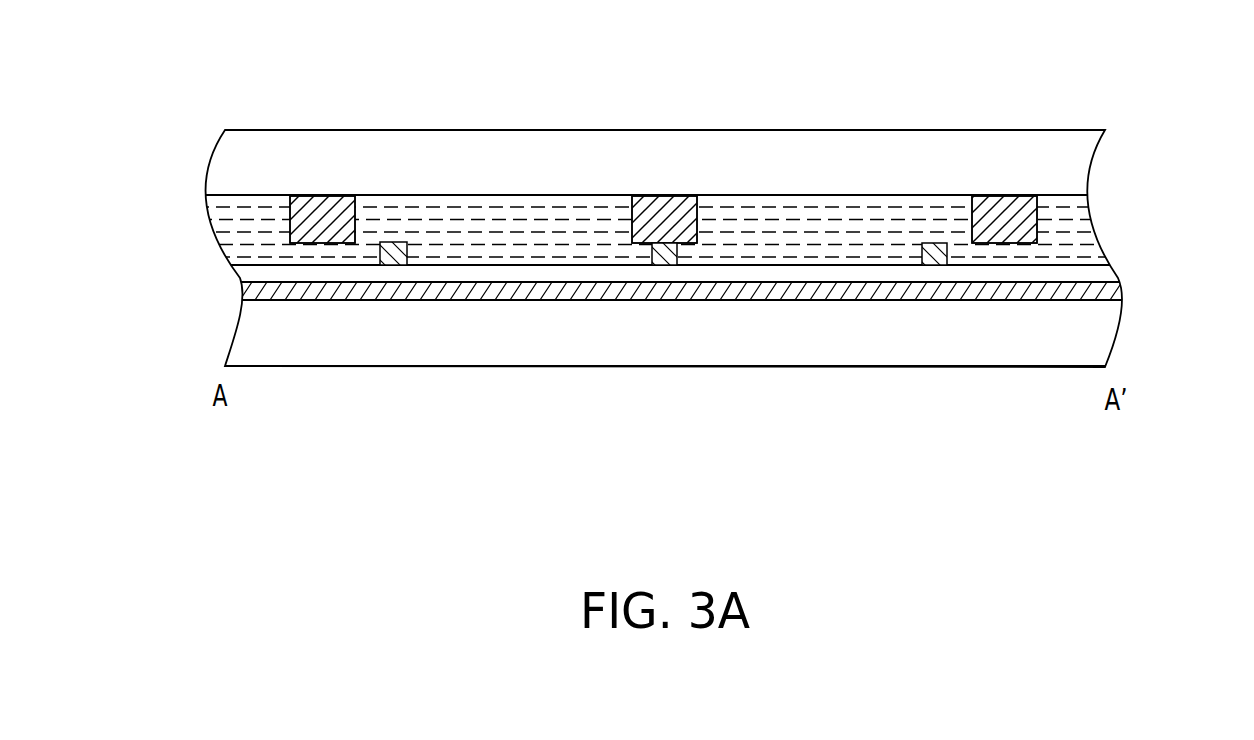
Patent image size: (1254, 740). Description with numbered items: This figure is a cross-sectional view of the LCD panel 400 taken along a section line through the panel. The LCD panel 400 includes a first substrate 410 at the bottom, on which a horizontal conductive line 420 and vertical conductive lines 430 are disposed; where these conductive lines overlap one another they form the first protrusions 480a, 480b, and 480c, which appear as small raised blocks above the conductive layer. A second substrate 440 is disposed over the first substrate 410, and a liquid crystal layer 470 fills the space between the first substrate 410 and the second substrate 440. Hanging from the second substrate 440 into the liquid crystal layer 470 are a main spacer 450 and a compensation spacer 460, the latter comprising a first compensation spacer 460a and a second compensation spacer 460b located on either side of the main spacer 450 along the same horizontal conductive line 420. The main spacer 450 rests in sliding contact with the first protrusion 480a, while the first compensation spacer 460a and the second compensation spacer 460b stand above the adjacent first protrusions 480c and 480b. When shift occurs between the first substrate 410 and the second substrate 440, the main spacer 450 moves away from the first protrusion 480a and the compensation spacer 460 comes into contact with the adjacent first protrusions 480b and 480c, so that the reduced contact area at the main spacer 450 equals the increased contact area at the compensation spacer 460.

The LCD panel 400 is at (1137, 560).
The first substrate 410 is at (1147, 265).
The horizontal conductive lines 420 is at (253, 291).
The vertical conductive lines 430 is at (397, 243).
The second substrate 440 is at (1080, 158).
The main spacer 450 is at (648, 208).
The compensation spacer 460 is at (410, 467).
The first compensation spacer 460a is at (328, 232).
The second compensation spacer 460b is at (1012, 232).
The liquid crystal layer 470 is at (665, 230).
The first protrusion 480a is at (692, 257).
The first protrusion 480b is at (917, 257).
The first protrusion 480c is at (417, 250).